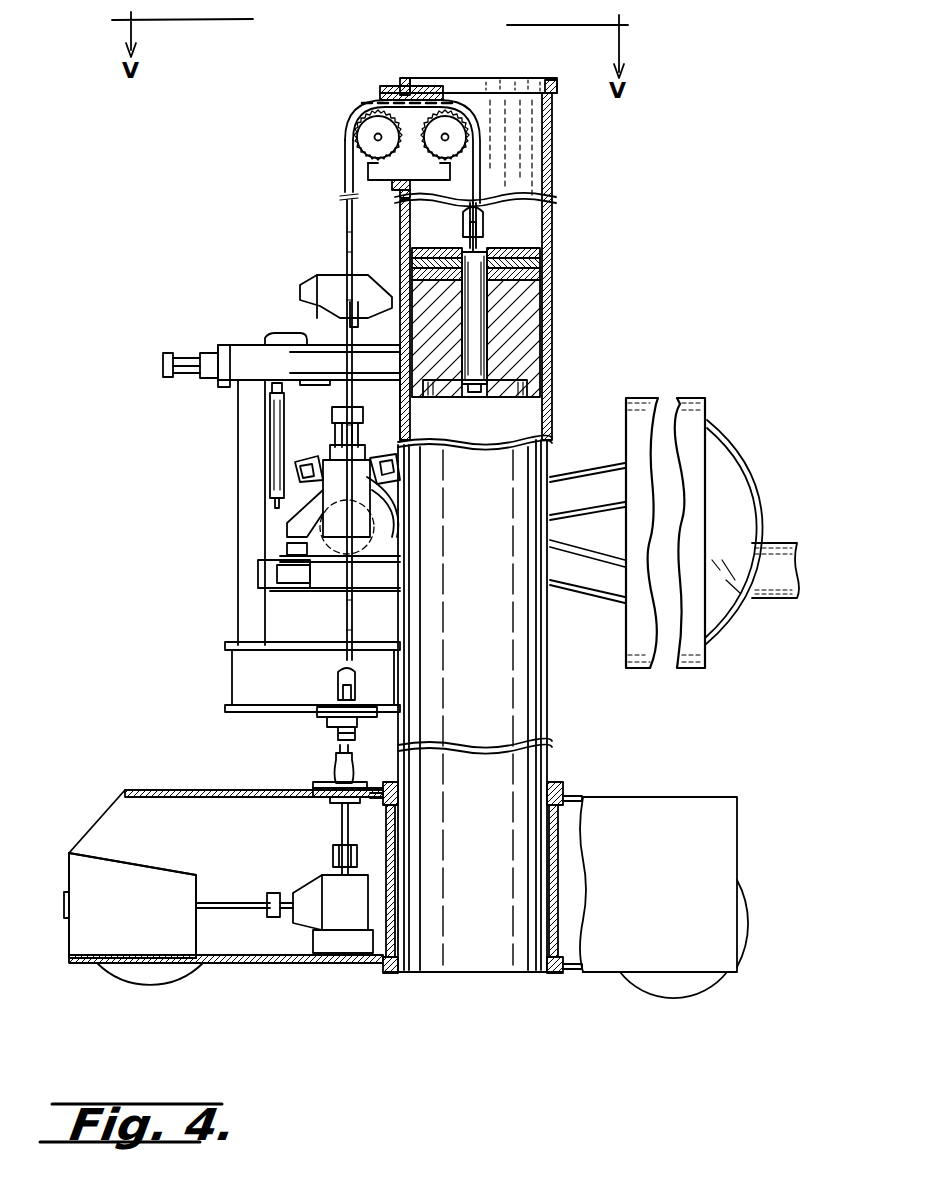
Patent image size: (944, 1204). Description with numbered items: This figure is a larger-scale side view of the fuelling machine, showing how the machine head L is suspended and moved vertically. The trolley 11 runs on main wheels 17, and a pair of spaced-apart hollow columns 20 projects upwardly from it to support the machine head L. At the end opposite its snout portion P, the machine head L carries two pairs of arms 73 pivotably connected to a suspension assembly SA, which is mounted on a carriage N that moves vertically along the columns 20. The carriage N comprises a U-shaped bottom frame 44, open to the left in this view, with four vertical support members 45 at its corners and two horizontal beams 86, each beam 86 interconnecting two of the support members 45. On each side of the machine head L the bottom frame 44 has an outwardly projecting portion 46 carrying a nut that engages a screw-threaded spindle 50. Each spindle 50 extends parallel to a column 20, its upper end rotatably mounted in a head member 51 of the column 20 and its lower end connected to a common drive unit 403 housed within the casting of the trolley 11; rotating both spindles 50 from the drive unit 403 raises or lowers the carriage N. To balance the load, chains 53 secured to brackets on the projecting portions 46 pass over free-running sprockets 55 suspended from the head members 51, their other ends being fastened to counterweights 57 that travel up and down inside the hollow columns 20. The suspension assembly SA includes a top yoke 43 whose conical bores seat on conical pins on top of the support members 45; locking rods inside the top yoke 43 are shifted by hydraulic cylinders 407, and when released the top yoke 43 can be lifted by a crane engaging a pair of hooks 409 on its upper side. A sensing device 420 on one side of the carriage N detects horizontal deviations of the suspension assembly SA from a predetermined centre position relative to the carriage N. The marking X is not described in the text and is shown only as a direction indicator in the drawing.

The trolley 11 is at (160, 790).
The main wheels 17 is at (177, 977).
The columns 20 is at (554, 224).
The top yoke 43 is at (318, 355).
The U-shaped bottom frame 44 is at (238, 685).
The vertical support members 45 is at (238, 478).
The outwardly projecting portion 46 is at (335, 718).
The screw-threaded spindle 50 is at (335, 763).
The head member 51 is at (408, 78).
The chains 53 is at (462, 102).
The free-running sprockets 55 is at (366, 140).
The counter weights 57 is at (522, 329).
The arms 73 is at (586, 474).
The horizontal beams 86 is at (318, 590).
The common drive unit 403 is at (144, 866).
The hydraulic cylinder 407 is at (188, 378).
The hooks 409 is at (326, 283).
The sensing device 420 is at (258, 574).
The suspension assembly SA is at (214, 326).
The carriage N is at (205, 612).
The direction X is at (348, 600).
The machine head L is at (708, 432).
The snout portion P is at (780, 600).